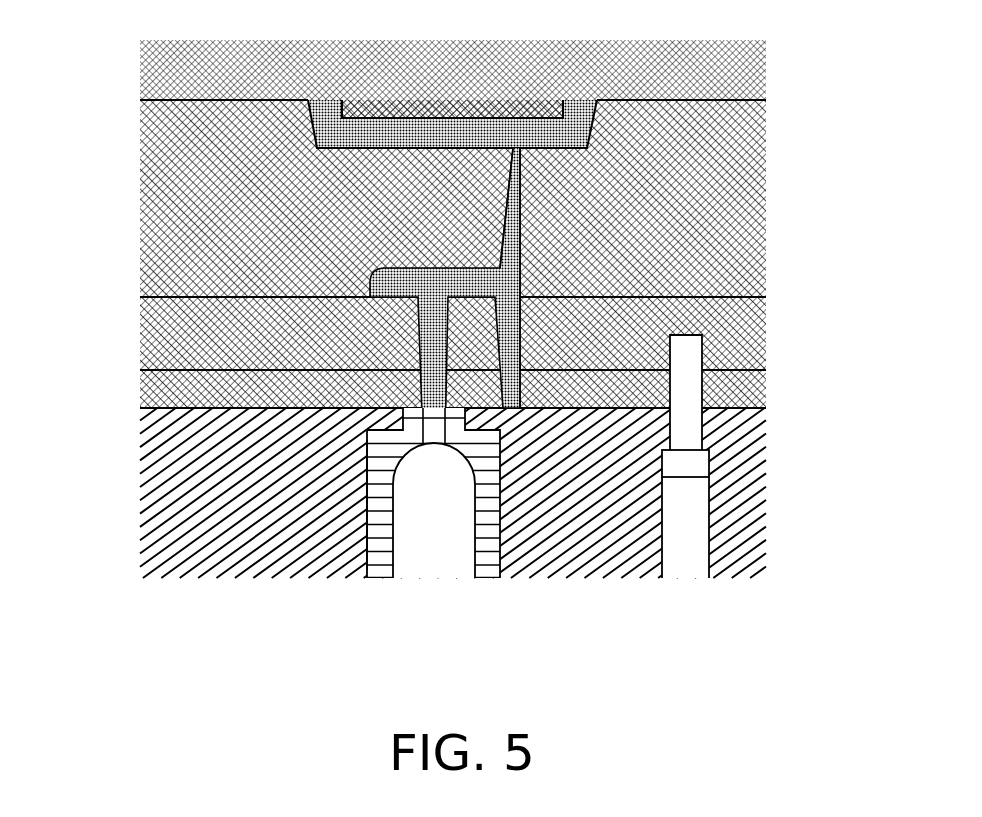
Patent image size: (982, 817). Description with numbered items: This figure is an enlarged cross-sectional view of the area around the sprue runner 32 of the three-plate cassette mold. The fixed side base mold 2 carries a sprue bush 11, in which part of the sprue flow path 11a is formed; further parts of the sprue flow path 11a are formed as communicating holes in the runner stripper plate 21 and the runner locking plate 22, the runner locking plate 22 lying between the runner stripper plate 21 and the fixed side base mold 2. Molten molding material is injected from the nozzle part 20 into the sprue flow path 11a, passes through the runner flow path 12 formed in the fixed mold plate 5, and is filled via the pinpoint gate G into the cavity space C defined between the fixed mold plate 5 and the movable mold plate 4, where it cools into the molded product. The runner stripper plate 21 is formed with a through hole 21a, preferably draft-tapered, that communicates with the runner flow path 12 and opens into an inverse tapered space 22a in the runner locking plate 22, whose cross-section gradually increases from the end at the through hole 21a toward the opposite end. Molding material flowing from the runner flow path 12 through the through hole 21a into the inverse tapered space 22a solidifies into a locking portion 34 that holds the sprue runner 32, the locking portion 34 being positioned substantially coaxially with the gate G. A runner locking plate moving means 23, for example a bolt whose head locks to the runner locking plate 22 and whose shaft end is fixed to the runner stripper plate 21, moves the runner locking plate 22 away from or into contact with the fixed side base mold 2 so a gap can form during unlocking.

The fixed side base mold 2 is at (155, 461).
The movable mold plate 4 is at (160, 78).
The fixed mold plate 5 is at (161, 198).
The sprue bush 11 is at (490, 553).
The sprue flow path 11a is at (307, 445).
The runner flow path 12 is at (525, 268).
The nozzle part 20 is at (437, 552).
The runner stripper plate 21 is at (145, 327).
The through hole 21a is at (560, 331).
The runner locking plate 22 is at (143, 395).
The inverse tapered space 22a is at (567, 412).
The runner locking plate moving means 23 is at (690, 466).
The sprue runner 32 is at (433, 266).
The locking portion 34 is at (515, 412).
The cavity space C is at (373, 118).
The gate G is at (513, 148).